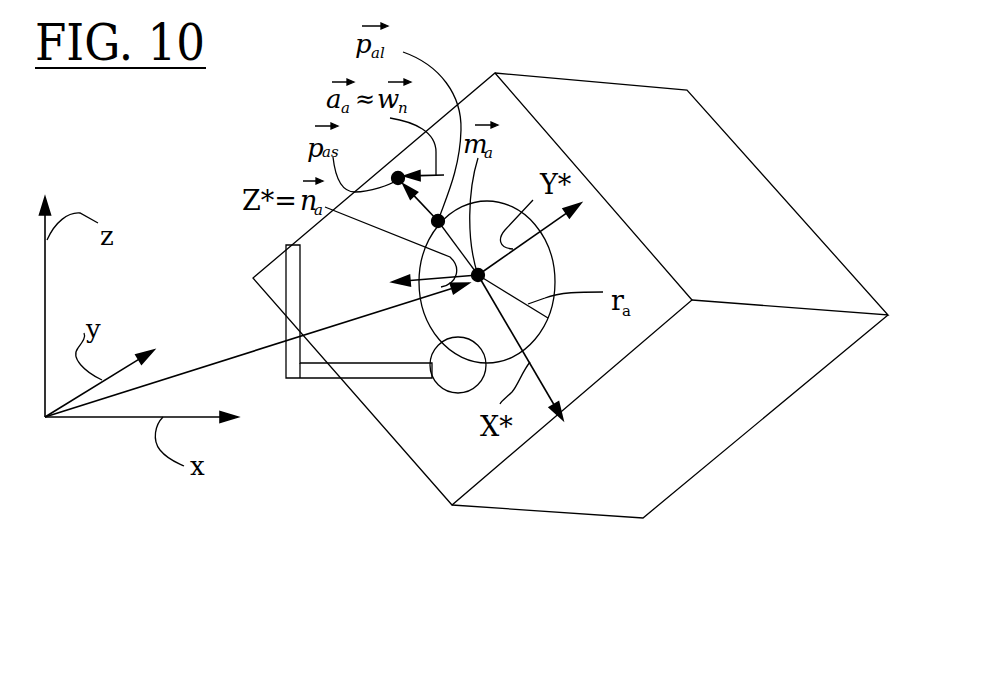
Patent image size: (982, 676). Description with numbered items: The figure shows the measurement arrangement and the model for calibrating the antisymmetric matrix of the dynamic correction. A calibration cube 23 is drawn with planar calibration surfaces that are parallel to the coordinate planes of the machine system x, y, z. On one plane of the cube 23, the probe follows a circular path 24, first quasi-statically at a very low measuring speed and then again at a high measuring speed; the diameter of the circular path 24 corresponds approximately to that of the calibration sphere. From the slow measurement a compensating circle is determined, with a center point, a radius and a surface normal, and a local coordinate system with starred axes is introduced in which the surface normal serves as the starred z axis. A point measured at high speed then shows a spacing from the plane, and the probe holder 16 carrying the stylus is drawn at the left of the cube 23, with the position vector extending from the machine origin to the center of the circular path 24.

The bracket 16 is at (350, 374).
The calibration cube 23 is at (680, 368).
The circular path 24 is at (556, 268).